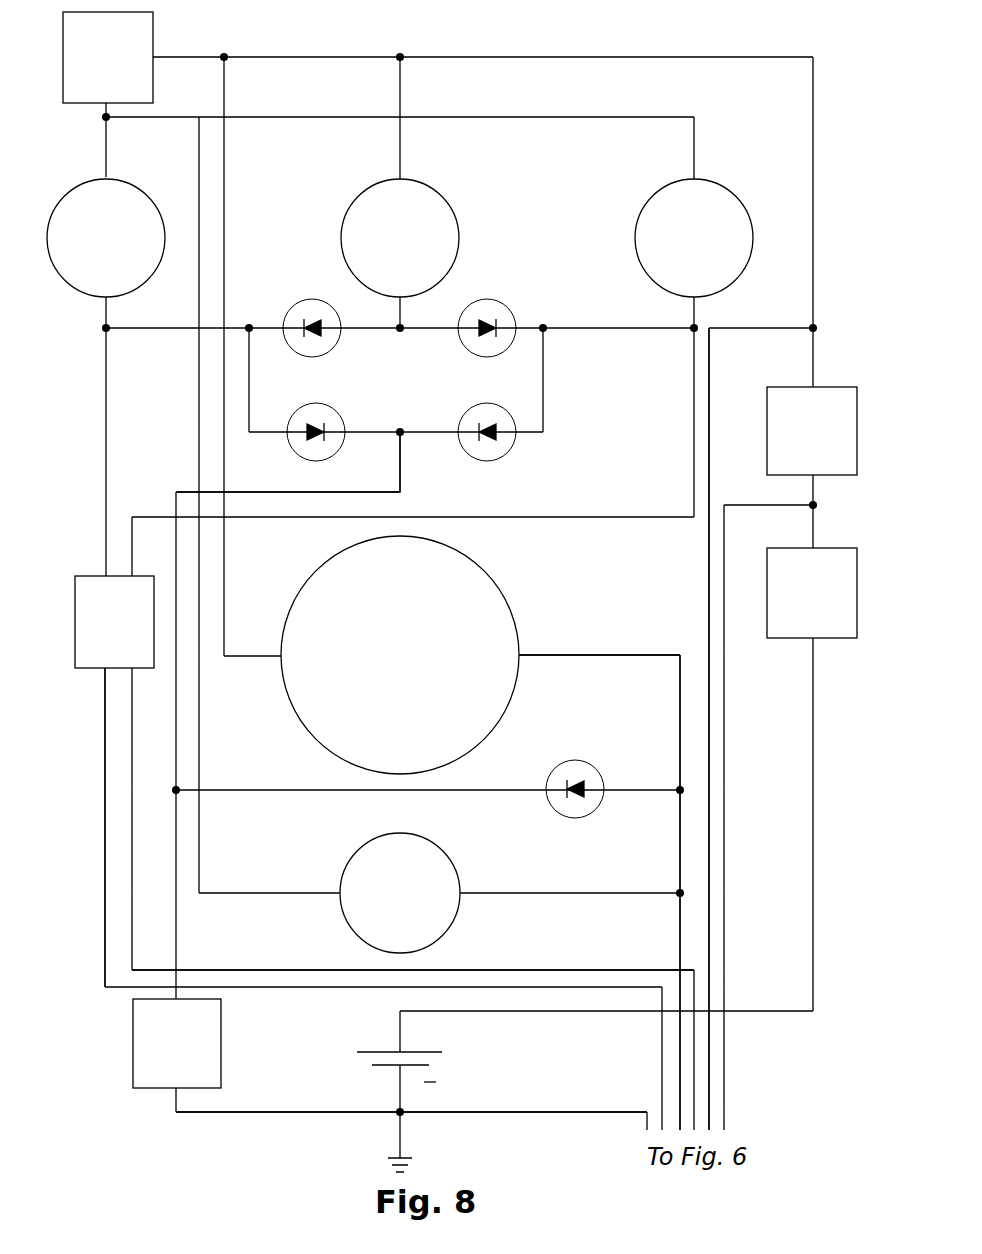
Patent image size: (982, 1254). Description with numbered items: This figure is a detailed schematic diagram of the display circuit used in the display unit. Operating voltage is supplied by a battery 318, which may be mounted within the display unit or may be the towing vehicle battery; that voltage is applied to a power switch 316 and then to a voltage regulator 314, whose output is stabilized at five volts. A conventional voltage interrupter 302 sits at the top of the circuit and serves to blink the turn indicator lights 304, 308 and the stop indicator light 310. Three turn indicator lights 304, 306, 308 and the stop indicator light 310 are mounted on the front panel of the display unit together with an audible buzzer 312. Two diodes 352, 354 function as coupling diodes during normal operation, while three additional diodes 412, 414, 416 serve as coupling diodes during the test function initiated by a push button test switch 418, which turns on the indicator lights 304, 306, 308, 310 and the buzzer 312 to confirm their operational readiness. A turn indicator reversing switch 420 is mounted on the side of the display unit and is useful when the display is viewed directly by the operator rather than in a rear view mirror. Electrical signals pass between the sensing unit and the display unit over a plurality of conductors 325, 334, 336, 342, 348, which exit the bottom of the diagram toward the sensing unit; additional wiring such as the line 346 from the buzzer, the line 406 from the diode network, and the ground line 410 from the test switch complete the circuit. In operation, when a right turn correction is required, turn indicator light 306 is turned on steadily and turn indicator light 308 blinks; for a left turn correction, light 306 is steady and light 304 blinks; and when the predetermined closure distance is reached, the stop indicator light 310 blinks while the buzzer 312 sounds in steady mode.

The voltage interrupter 302 is at (165, 27).
The turn indicator light 304 is at (125, 178).
The turn indicator light 306 is at (447, 190).
The turn indicator light 308 is at (723, 180).
The stop indicator light 310 is at (430, 842).
The audible buzzer 312 is at (478, 560).
The voltage regulator 314 is at (826, 382).
The power switch 316 is at (828, 548).
The battery 318 is at (450, 1060).
The conductor 325 is at (672, 933).
The conductor 334 is at (715, 385).
The conductor 336 is at (237, 970).
The conductor 342 is at (103, 812).
The conductor 346 is at (580, 648).
The conductor 348 is at (497, 1108).
The diode 352 is at (305, 303).
The diode 354 is at (498, 305).
The conductor 406 is at (410, 478).
The conductor 410 is at (247, 1110).
The diode 412 is at (328, 402).
The diode 414 is at (488, 397).
The diode 416 is at (588, 760).
The push button test switch 418 is at (225, 1032).
The turn indicator reversing switch 420 is at (68, 618).